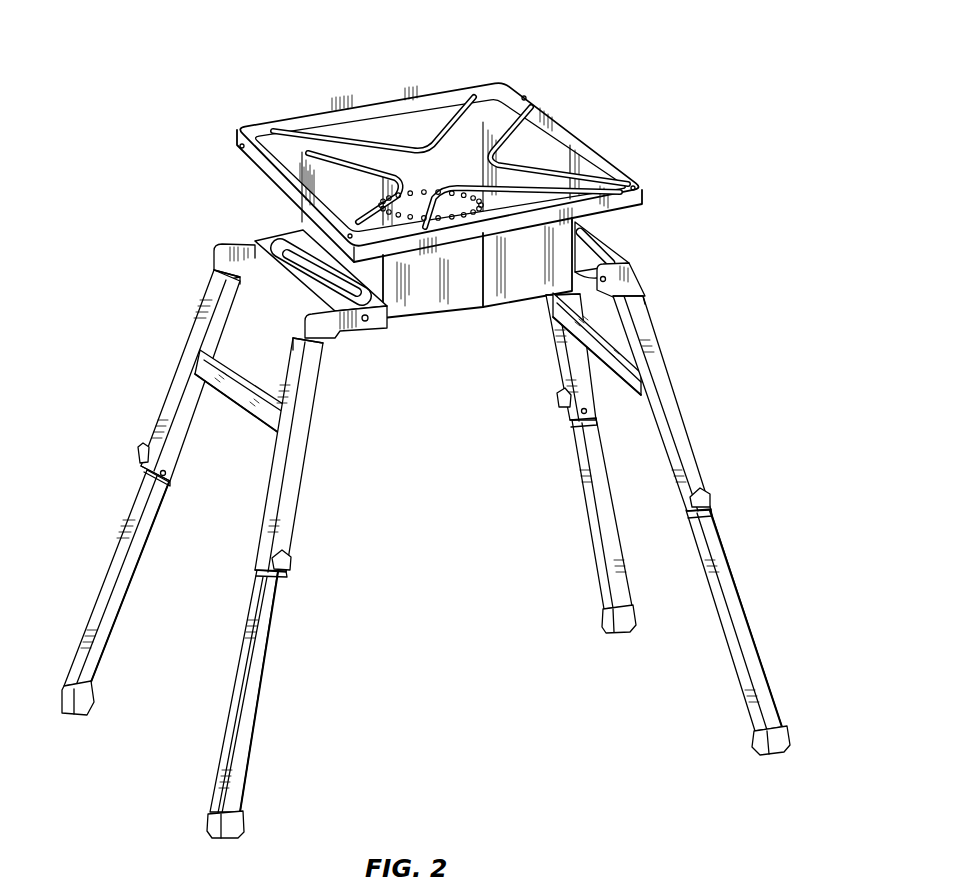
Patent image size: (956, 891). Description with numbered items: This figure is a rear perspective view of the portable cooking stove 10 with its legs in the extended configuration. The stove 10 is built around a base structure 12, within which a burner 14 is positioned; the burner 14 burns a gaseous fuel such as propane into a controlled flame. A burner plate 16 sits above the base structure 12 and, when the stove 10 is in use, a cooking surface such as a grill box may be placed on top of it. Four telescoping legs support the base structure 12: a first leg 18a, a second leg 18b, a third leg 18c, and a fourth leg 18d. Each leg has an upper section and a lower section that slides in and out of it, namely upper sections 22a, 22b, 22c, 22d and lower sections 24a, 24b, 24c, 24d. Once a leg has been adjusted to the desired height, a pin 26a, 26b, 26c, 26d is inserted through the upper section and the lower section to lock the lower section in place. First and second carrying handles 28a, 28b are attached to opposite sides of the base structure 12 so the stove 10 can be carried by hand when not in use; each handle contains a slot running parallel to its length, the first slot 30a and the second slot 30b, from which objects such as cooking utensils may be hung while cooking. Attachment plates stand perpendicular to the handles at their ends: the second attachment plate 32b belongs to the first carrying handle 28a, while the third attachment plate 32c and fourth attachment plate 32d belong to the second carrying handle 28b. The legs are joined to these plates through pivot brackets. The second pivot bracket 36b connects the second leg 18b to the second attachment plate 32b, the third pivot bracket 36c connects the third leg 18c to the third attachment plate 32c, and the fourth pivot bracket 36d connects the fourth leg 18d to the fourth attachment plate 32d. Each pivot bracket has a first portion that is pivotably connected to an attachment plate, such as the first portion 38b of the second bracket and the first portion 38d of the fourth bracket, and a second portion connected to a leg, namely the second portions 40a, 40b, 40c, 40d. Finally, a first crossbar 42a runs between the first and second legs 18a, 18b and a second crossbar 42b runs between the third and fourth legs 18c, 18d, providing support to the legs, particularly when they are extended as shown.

The stove 10 is at (426, 427).
The base structure 12 is at (453, 307).
The burner 14 is at (425, 196).
The burner plate 16 is at (352, 107).
The first leg 18a is at (560, 463).
The second leg 18b is at (701, 519).
The third leg 18c is at (151, 492).
The fourth leg 18d is at (297, 588).
The upper section 22a is at (540, 360).
The upper section 22b is at (676, 401).
The upper section 22c is at (169, 378).
The upper section 22d is at (321, 457).
The lower section 24a is at (587, 508).
The lower section 24b is at (720, 625).
The lower section 24c is at (125, 582).
The lower section 24d is at (258, 677).
The pin 26a is at (561, 394).
The pin 26b is at (712, 497).
The pin 26c is at (140, 449).
The pin 26d is at (291, 560).
The first carrying handle 28a is at (652, 225).
The second carrying handle 28b is at (308, 256).
The first slot 30a is at (612, 237).
The second slot 30b is at (308, 266).
The second attachment plate 32b is at (607, 262).
The third attachment plate 32c is at (290, 240).
The fourth attachment plate 32d is at (373, 320).
The second pivot bracket 36b is at (659, 287).
The third pivot bracket 36c is at (208, 236).
The fourth pivot bracket 36d is at (332, 354).
The first portion 38b is at (632, 278).
The first portion 38d is at (369, 357).
The second portion 40a is at (545, 313).
The second portion 40b is at (640, 312).
The second portion 40c is at (227, 273).
The second portion 40d is at (312, 372).
The first crossbar 42a is at (618, 365).
The second crossbar 42b is at (240, 403).